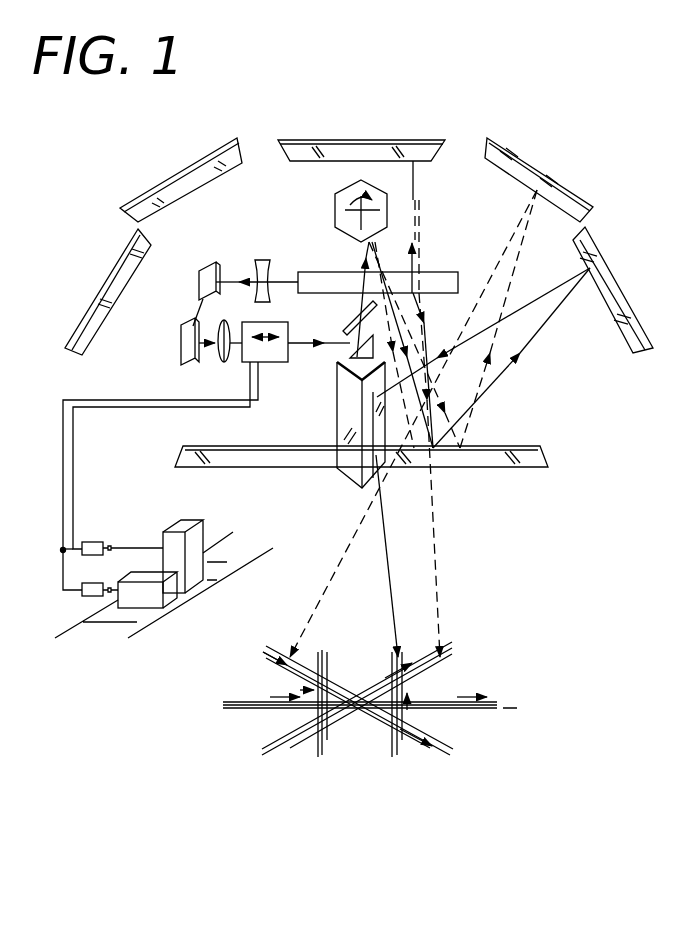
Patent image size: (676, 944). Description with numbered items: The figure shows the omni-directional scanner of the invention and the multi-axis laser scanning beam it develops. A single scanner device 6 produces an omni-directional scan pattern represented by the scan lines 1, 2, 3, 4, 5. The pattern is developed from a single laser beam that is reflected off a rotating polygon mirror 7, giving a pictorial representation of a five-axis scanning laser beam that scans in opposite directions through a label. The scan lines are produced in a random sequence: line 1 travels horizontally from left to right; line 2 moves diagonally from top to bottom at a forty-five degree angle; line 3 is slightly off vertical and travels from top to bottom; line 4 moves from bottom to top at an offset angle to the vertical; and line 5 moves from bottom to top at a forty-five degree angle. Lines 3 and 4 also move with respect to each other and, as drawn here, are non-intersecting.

The scan line 1 is at (356, 705).
The scan line 2 is at (403, 180).
The scan line 3 is at (331, 691).
The scan line 4 is at (406, 720).
The scan line 5 is at (344, 716).
The scanner device 6 is at (462, 108).
The rotating polygon mirror 7 is at (335, 210).